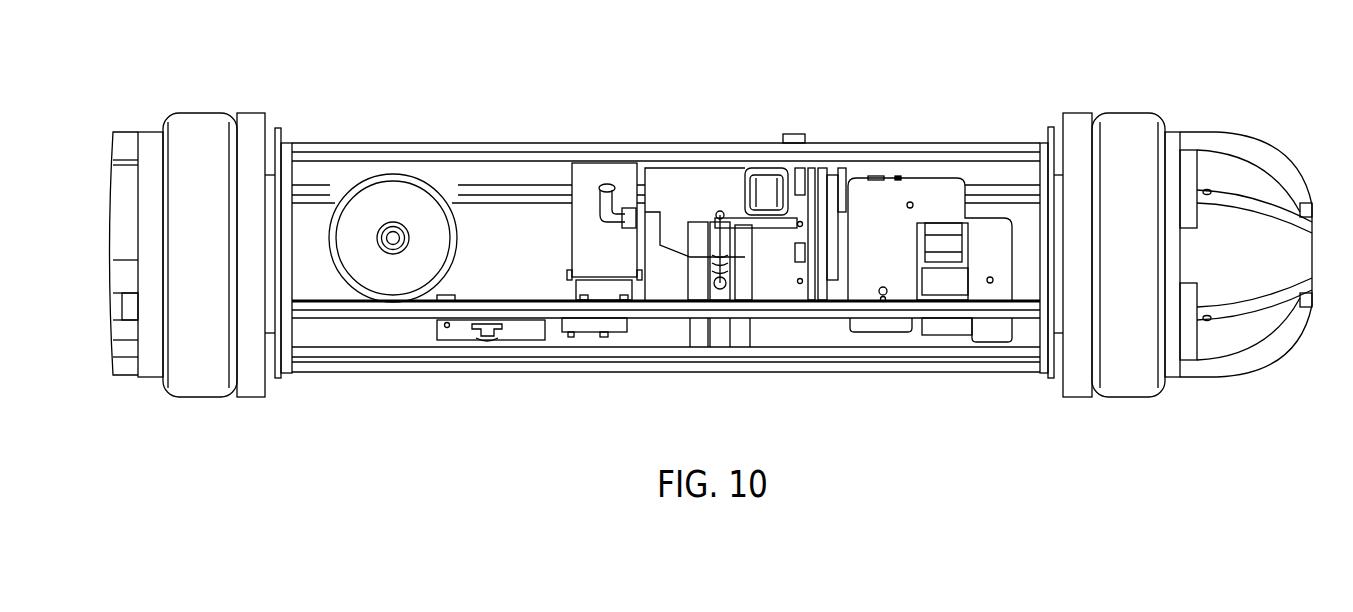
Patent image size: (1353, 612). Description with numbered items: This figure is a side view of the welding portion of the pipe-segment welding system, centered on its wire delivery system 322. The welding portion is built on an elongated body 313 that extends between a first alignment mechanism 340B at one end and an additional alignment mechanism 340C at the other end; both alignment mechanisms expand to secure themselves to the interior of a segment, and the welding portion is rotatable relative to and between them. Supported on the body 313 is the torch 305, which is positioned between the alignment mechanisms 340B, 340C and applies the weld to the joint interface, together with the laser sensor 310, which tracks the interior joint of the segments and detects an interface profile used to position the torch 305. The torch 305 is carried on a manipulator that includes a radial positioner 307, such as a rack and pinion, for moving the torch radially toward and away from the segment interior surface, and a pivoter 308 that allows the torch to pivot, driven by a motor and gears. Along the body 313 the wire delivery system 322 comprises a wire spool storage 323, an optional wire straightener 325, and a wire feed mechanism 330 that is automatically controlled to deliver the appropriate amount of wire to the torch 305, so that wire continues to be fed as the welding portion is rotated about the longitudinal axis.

The torch 305 is at (793, 134).
The radial positioner 307 is at (897, 292).
The pivoter 308 is at (893, 178).
The laser sensor 310 is at (766, 197).
The body 313 is at (328, 143).
The wire delivery system 322 is at (466, 381).
The wire spool storage 323 is at (400, 178).
The wire straightener 325 is at (527, 335).
The wire feed mechanism 330 is at (605, 165).
The alignment mechanism 340B is at (196, 113).
The alignment mechanism 340C is at (1122, 113).